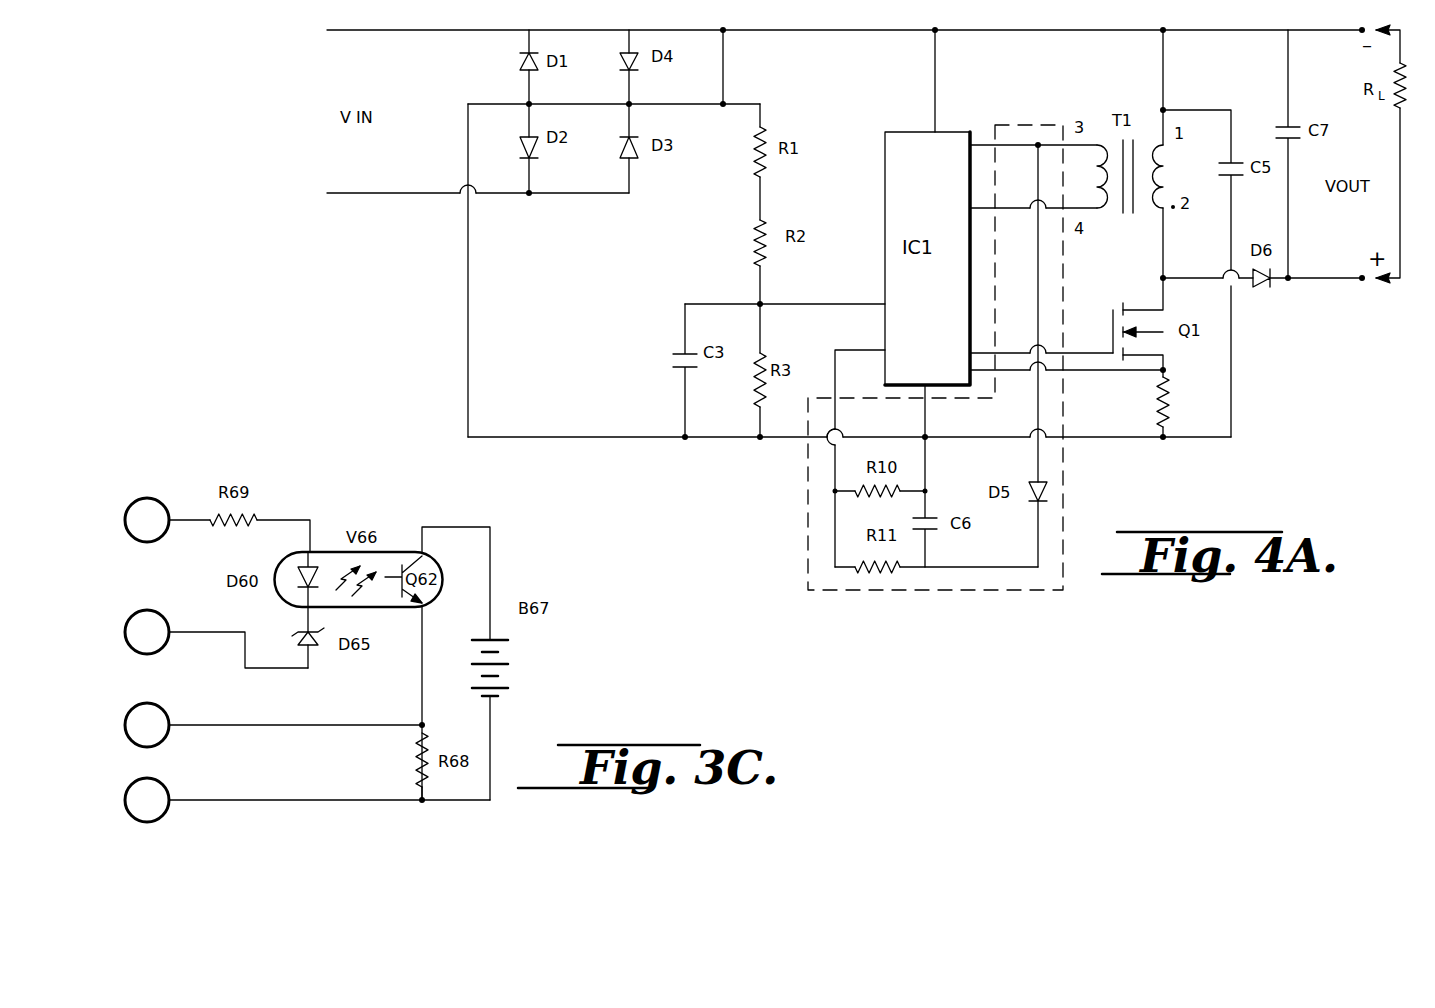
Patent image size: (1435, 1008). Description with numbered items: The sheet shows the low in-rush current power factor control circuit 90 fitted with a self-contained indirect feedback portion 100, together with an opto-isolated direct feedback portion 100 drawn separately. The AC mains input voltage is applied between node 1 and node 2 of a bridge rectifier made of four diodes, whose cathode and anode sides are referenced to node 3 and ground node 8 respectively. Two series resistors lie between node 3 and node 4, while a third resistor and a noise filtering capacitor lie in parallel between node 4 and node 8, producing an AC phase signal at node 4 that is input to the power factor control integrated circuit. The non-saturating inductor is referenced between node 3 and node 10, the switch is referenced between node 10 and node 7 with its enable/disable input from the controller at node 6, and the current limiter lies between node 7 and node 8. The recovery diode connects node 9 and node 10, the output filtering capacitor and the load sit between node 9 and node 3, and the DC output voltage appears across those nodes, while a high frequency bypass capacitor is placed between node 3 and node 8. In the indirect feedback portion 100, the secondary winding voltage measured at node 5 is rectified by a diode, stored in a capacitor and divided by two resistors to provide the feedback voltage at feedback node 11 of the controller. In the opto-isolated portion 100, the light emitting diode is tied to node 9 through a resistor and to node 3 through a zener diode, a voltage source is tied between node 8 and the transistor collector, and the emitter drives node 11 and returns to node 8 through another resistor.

In FIG. 4A, the node 1 is at (521, 32).
In FIG. 4A, the node 2 is at (529, 195).
In FIG. 4A, the node 3 is at (724, 100).
In FIG. 3C, the node 3 is at (216, 639).
In FIG. 4A, the node 4 is at (758, 302).
In FIG. 4A, the node 5 is at (1038, 143).
In FIG. 4A, the node 6 is at (1112, 334).
In FIG. 4A, the node 7 is at (1170, 368).
In FIG. 4A, the node 8 is at (686, 440).
In FIG. 3C, the node 8 is at (307, 800).
In FIG. 4A, the node 9 is at (1290, 276).
In FIG. 3C, the node 9 is at (167, 520).
In FIG. 4A, the node 10 is at (1166, 273).
In FIG. 4A, the feedback node 11 is at (880, 348).
In FIG. 3C, the feedback node 11 is at (275, 725).
In FIG. 4A, the low in-rush current power factor control circuit 90 is at (745, 470).
In FIG. 4A, the feedback portion 100 is at (1064, 455).
In FIG. 3C, the feedback portion 100 is at (450, 525).